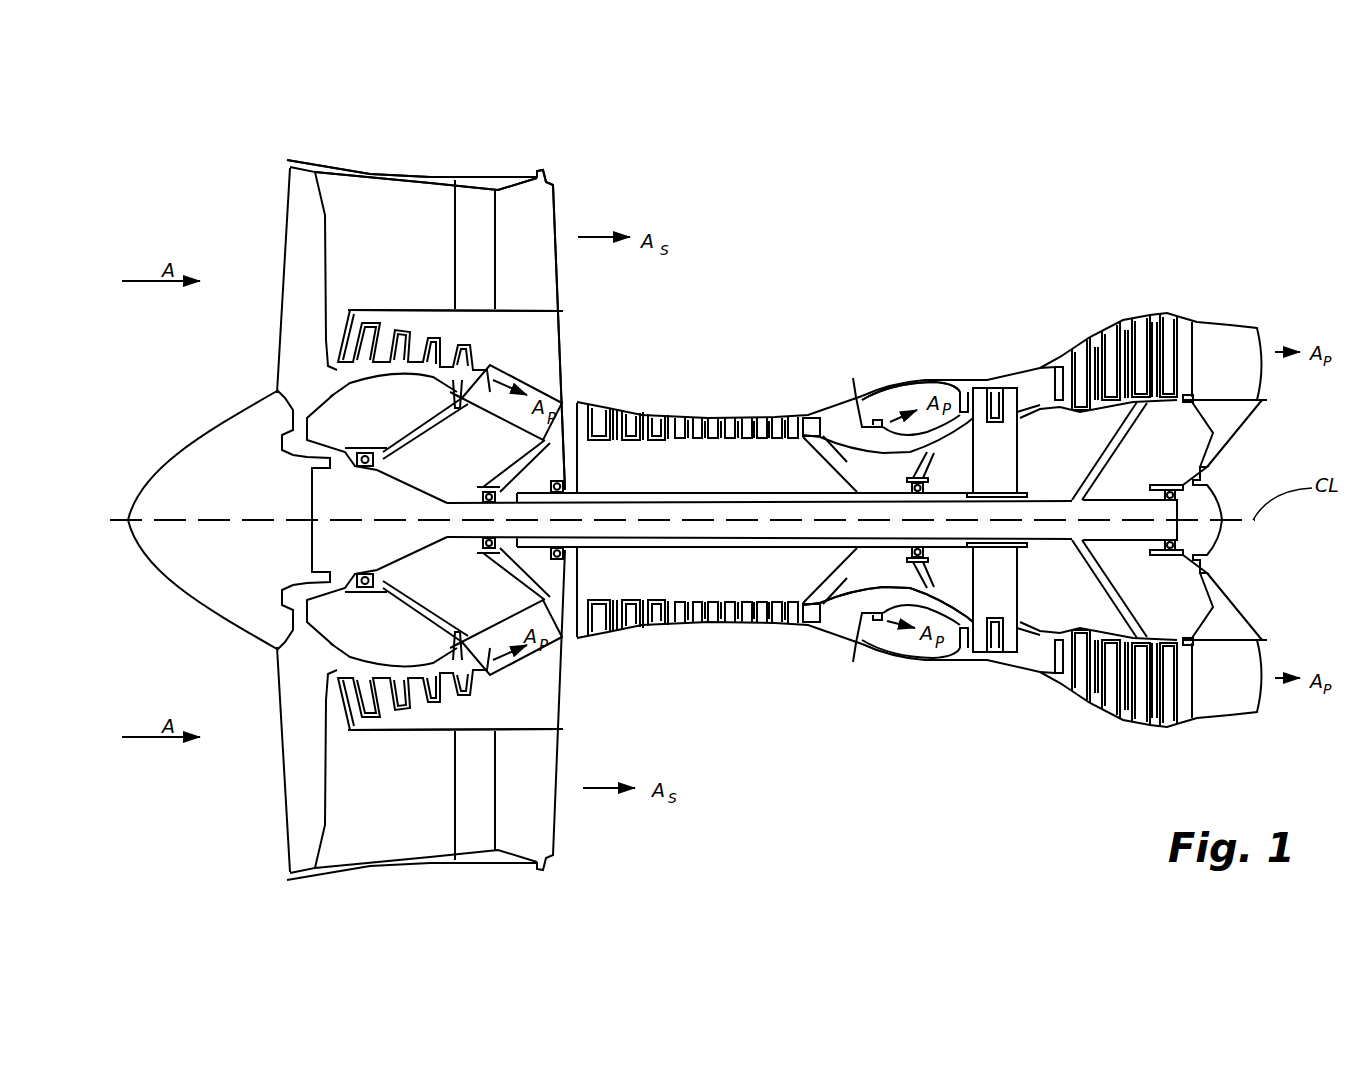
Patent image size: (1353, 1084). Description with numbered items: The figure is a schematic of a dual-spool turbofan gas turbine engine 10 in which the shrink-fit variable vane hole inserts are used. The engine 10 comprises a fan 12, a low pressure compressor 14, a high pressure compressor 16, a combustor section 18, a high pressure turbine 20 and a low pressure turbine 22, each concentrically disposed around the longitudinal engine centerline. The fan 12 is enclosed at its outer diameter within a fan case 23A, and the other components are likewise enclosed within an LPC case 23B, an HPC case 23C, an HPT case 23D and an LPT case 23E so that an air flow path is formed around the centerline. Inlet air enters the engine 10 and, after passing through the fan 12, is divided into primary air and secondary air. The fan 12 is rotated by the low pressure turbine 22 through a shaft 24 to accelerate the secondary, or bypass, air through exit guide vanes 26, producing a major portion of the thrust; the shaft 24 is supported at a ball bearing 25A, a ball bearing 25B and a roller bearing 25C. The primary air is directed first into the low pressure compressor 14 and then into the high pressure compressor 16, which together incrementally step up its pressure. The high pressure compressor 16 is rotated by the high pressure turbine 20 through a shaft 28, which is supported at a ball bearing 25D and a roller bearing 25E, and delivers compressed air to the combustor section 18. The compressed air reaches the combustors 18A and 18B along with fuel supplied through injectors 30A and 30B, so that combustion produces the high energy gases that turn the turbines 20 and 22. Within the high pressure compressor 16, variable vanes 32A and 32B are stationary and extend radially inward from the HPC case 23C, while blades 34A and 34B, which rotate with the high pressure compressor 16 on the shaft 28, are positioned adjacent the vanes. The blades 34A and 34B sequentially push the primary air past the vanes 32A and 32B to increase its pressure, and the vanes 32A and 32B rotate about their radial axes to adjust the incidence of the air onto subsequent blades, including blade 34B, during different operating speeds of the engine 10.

The gas turbine engine 10 is at (1052, 230).
The fan 12 is at (285, 792).
The low pressure compressor 14 is at (412, 710).
The high pressure compressor 16 is at (737, 652).
The combustor section 18 is at (900, 669).
The combustor 18A is at (943, 647).
The combustor 18B is at (953, 388).
The high pressure turbine 20 is at (985, 680).
The low pressure turbine 22 is at (1105, 732).
The fan case 23A is at (390, 178).
The LPC case 23B is at (437, 330).
The HPC case 23C is at (712, 415).
The HPT case 23D is at (1030, 668).
The LPT case 23E is at (1167, 313).
The shaft 24 is at (815, 510).
The ball bearing 25A is at (340, 440).
The ball bearing 25B is at (490, 583).
The roller bearing 25C is at (1095, 645).
The ball bearing 25D is at (553, 492).
The roller bearing 25E is at (911, 478).
The exit guide vanes 26 is at (478, 280).
The shaft 28 is at (893, 603).
The injector 30A is at (863, 395).
The injector 30B is at (858, 640).
The variable vane 32A is at (630, 412).
The variable vane 32B is at (668, 435).
The blade 34A is at (632, 412).
The blade 34B is at (643, 425).